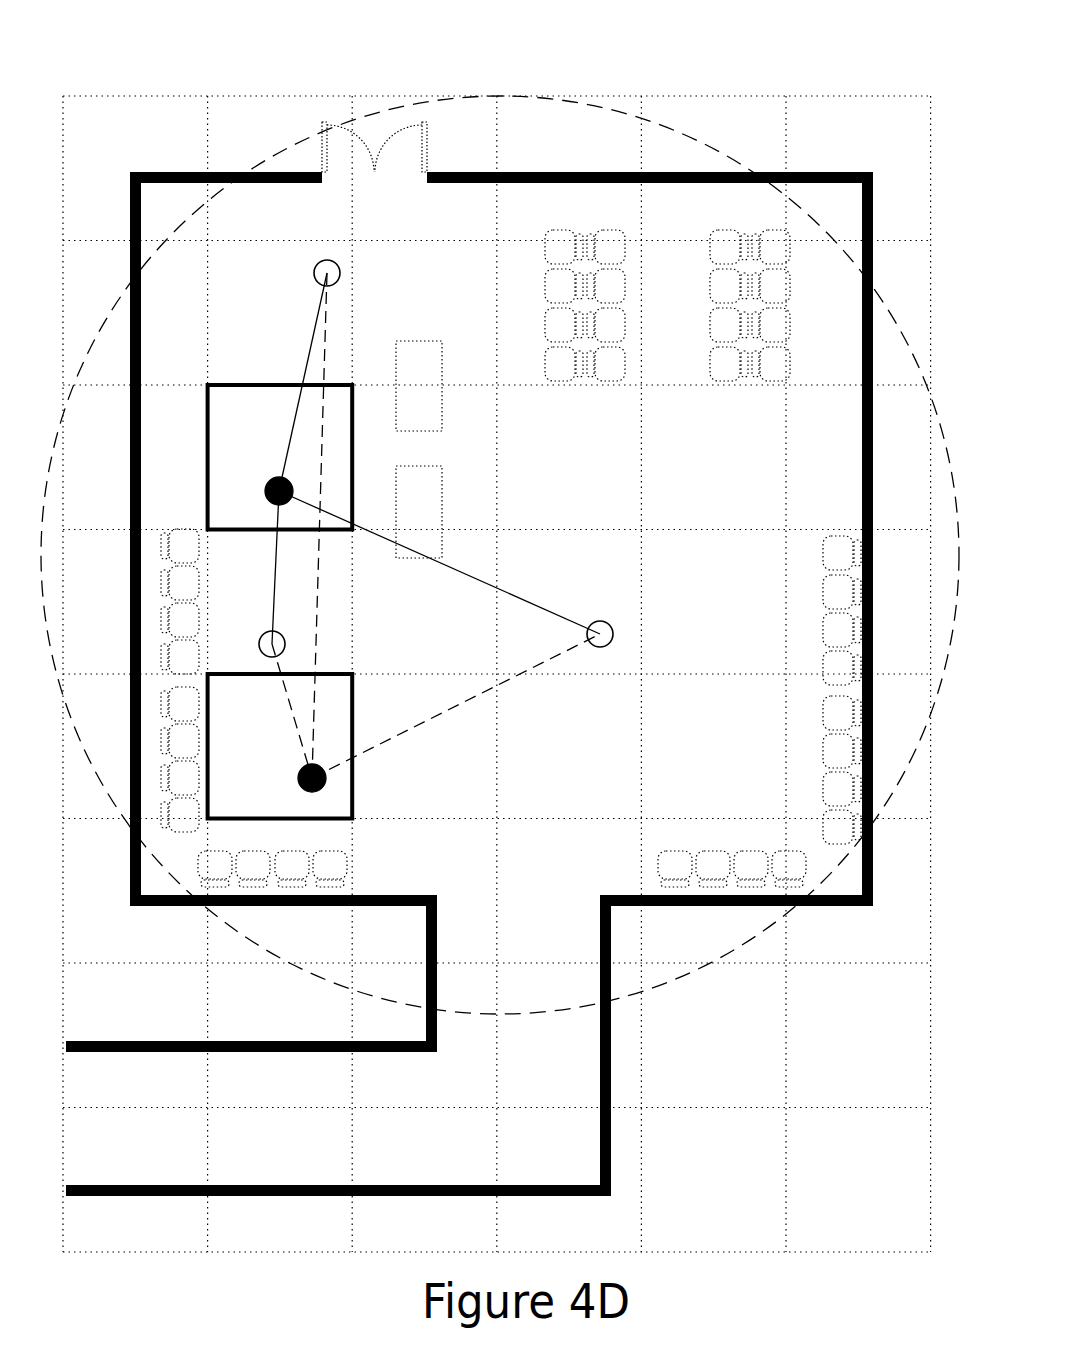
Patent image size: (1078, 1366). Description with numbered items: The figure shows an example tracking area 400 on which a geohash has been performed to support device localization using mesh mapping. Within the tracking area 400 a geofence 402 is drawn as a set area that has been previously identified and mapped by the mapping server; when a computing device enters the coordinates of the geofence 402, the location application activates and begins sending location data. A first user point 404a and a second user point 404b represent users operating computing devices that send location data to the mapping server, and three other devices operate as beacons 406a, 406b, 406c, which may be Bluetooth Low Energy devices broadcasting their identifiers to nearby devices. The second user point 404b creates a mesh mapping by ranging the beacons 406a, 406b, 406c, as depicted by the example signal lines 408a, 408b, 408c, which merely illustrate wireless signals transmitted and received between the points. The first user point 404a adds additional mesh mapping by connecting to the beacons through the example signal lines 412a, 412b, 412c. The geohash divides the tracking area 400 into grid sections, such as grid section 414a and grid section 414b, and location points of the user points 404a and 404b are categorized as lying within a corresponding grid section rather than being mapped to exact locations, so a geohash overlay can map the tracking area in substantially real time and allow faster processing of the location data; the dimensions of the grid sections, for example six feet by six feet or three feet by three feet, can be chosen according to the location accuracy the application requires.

The tracking area 400 is at (108, 68).
The geofence 402 is at (676, 135).
The first user point 404a is at (326, 787).
The second user point 404b is at (293, 489).
The beacon 406a is at (613, 634).
The beacon 406b is at (285, 644).
The beacon 406c is at (340, 273).
The signal line 408a is at (311, 358).
The signal line 408b is at (496, 587).
The signal line 408c is at (278, 585).
The signal line 412a is at (316, 695).
The signal line 412b is at (302, 738).
The signal line 412c is at (436, 716).
The grid section 414a is at (280, 457).
The grid section 414b is at (280, 746).